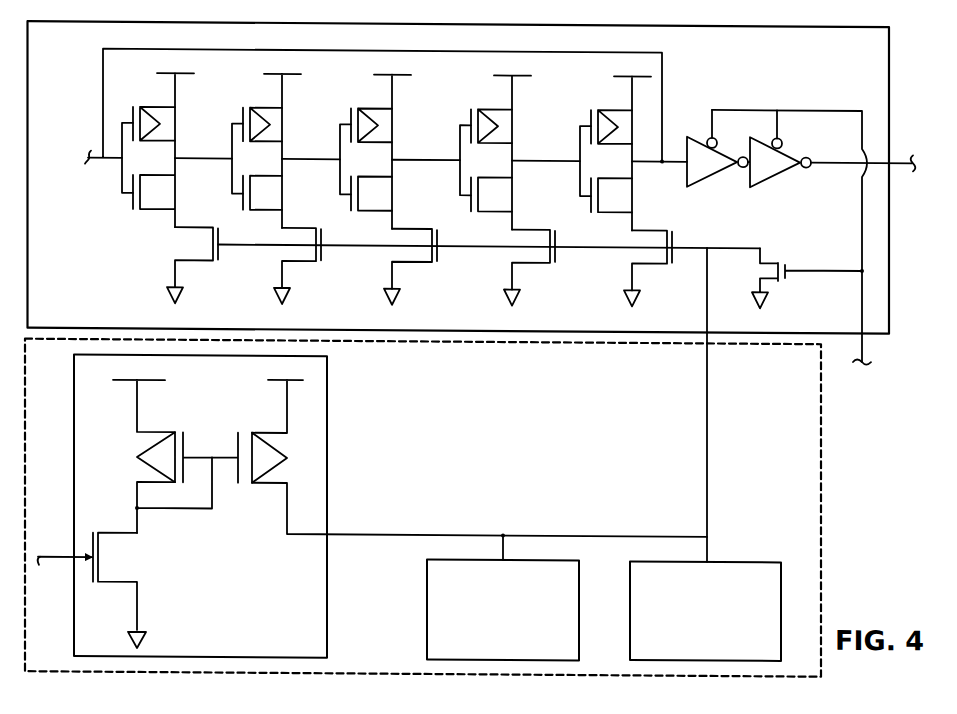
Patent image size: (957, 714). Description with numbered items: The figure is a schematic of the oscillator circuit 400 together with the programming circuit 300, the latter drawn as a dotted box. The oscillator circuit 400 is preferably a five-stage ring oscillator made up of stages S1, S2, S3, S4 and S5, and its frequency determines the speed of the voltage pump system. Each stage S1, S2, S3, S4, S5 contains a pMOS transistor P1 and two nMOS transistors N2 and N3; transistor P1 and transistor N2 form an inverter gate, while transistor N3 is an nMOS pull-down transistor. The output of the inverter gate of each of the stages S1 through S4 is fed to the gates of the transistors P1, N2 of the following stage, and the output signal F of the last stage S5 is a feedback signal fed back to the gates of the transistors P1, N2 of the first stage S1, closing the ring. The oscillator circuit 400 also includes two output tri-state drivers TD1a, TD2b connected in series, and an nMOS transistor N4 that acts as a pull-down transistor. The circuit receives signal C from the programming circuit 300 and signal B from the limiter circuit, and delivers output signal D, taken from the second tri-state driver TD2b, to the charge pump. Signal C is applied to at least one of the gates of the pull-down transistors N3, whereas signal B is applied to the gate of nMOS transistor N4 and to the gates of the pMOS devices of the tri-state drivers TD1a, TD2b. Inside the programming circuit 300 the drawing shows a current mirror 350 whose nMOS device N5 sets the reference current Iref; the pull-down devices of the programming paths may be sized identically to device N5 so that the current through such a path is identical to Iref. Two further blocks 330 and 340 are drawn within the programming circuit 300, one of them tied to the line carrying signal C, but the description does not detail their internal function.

The oscillator circuit 400 is at (812, 64).
The programming circuit 300 is at (777, 398).
The current mirror circuit 350 is at (372, 507).
The control block 330 is at (603, 586).
The control block 340 is at (630, 619).
The pMOS transistor P1 is at (172, 123).
The nMOS transistor N2 is at (175, 193).
The nMOS pull-down transistor N3 is at (183, 247).
The nMOS transistor N4 is at (807, 275).
The current mirror device N5 is at (165, 543).
The first stage S1 is at (161, 306).
The second stage S2 is at (268, 306).
The third stage S3 is at (378, 306).
The fourth stage S4 is at (498, 306).
The fifth stage S5 is at (618, 306).
The output tri-state driver TD1a is at (711, 182).
The output tri-state driver TD2b is at (775, 182).
The output signal F is at (659, 140).
The signal C is at (707, 317).
The signal D is at (872, 163).
The signal B is at (851, 352).
The reference current Iref is at (65, 551).